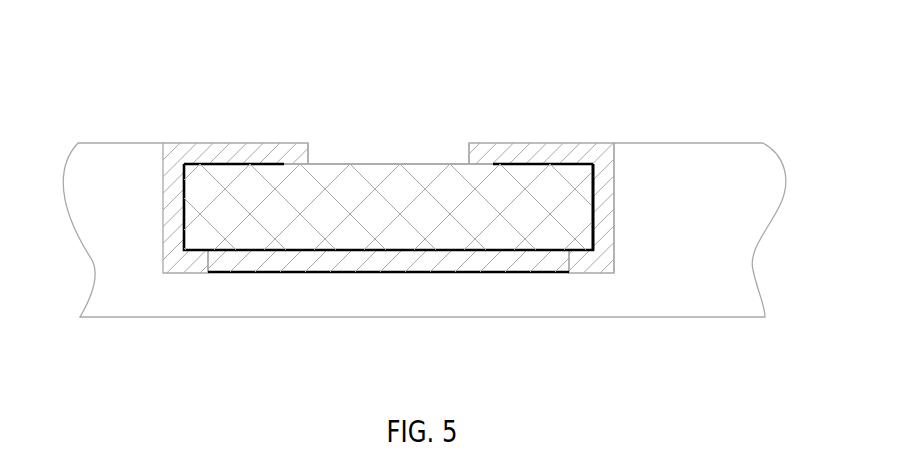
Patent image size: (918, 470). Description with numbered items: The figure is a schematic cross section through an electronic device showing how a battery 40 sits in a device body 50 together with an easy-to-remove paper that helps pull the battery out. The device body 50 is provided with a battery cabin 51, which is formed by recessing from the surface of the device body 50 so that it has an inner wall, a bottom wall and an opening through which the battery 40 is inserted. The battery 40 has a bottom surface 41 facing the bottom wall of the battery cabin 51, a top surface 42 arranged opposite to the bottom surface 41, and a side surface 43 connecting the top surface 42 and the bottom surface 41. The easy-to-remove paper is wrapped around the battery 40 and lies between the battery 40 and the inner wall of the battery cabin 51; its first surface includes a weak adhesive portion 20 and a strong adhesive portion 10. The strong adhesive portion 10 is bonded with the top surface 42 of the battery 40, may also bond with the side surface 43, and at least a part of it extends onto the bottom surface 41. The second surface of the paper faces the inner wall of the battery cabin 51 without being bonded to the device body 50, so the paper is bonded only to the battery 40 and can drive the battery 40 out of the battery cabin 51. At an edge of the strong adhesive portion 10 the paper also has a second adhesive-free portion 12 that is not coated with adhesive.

The strong adhesive portion 10 is at (247, 156).
The second adhesive-free portion 12 is at (307, 163).
The weak adhesive portion 20 is at (373, 253).
The battery 40 is at (517, 67).
The bottom surface 41 is at (452, 225).
The top surface 42 is at (375, 164).
The side surface 43 is at (590, 215).
The device body 50 is at (663, 195).
The battery cabin 51 is at (614, 248).